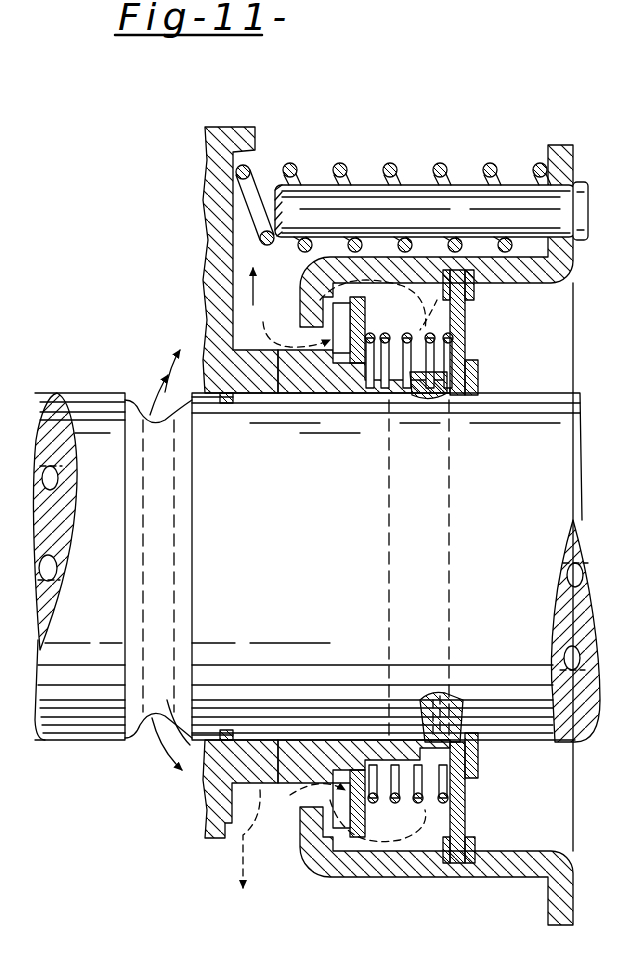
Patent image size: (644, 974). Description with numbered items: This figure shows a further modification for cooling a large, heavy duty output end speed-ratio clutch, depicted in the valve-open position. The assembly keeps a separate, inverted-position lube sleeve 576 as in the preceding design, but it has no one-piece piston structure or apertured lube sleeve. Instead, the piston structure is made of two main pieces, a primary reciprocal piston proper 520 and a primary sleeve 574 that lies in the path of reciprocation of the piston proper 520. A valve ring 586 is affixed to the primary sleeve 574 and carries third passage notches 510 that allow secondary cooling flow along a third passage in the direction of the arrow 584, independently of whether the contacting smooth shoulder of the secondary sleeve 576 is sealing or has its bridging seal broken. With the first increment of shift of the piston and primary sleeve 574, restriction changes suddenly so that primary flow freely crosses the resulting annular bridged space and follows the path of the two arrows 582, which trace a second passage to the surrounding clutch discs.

The primary reciprocal piston proper 520 is at (215, 275).
The third passage notches 510 is at (227, 519).
The arrows tracing second passage 582 is at (331, 322).
The arrow indicating secondary cooling flow 584 is at (450, 298).
The lube sleeve 576 is at (522, 268).
The valve ring 586 is at (396, 382).
The primary sleeve 574 is at (400, 380).